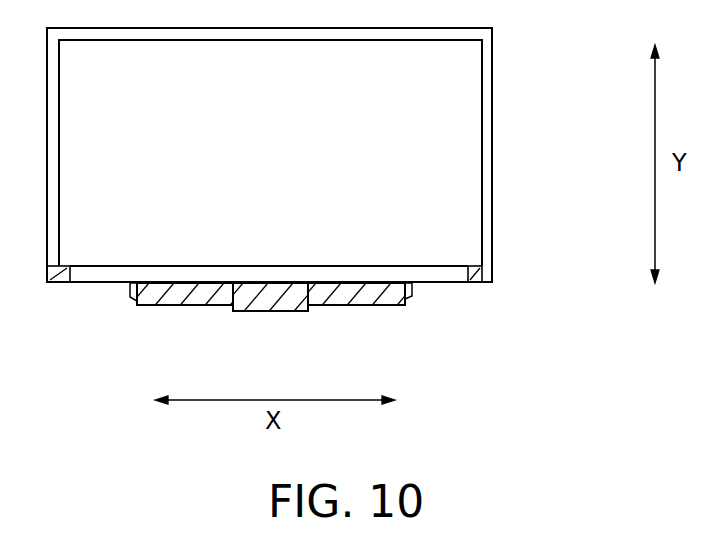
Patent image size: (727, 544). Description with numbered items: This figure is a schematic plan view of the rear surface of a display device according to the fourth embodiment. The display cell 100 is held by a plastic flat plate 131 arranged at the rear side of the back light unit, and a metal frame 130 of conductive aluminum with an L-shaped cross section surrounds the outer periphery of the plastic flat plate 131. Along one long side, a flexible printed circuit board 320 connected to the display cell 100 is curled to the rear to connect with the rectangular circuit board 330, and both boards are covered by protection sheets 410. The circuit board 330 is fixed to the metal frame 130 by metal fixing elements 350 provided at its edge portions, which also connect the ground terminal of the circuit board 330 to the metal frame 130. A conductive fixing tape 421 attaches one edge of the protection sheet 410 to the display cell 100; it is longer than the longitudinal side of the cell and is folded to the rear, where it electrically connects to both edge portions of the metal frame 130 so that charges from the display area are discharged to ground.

The display cell 100 is at (328, 169).
The metal frame 130 is at (488, 250).
The plastic flat plate 131 is at (473, 205).
The flexible printed circuit board 320 is at (273, 311).
The circuit board 330 is at (377, 305).
The metal fixing element 350 is at (410, 291).
The protection sheet 410 is at (134, 298).
The conductive fixing tape 421 is at (481, 284).